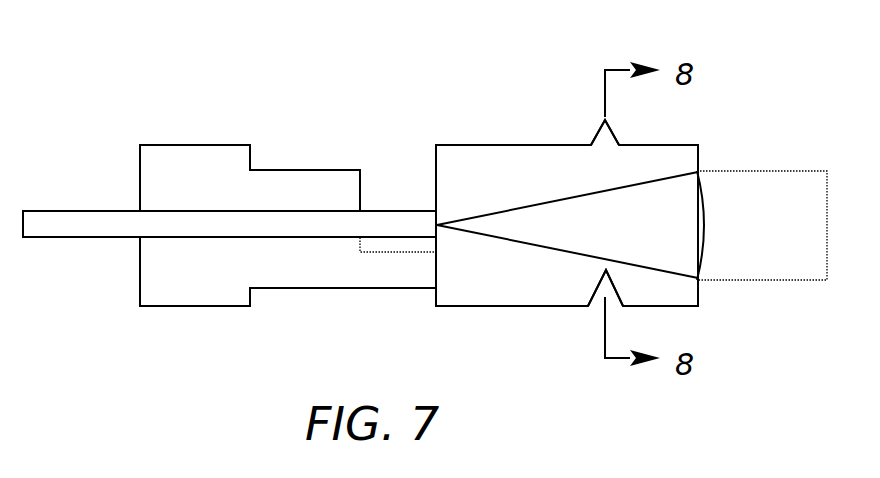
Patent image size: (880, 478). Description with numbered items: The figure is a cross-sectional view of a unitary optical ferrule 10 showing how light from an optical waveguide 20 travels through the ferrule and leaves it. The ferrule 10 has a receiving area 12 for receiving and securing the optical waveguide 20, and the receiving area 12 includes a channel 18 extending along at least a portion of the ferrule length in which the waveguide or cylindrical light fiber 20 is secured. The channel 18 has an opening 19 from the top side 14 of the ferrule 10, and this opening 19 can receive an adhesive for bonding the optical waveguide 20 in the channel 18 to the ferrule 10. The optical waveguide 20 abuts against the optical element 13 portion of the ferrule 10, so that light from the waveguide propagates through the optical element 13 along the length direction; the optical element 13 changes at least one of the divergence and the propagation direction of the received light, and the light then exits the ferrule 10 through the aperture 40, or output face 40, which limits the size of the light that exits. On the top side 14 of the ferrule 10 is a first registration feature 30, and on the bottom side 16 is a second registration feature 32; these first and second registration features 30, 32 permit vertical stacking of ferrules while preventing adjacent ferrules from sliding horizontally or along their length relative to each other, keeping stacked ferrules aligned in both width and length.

The ferrule 10 is at (296, 323).
The receiving area 12 is at (270, 160).
The optical element 13 is at (469, 320).
The top side 14 is at (521, 143).
The bottom side 16 is at (519, 307).
The channel 18 is at (327, 212).
The opening 19 is at (362, 180).
The optical waveguide 20 is at (73, 223).
The first registration feature 30 is at (603, 133).
The second registration feature 32 is at (597, 300).
The aperture 40 is at (708, 229).